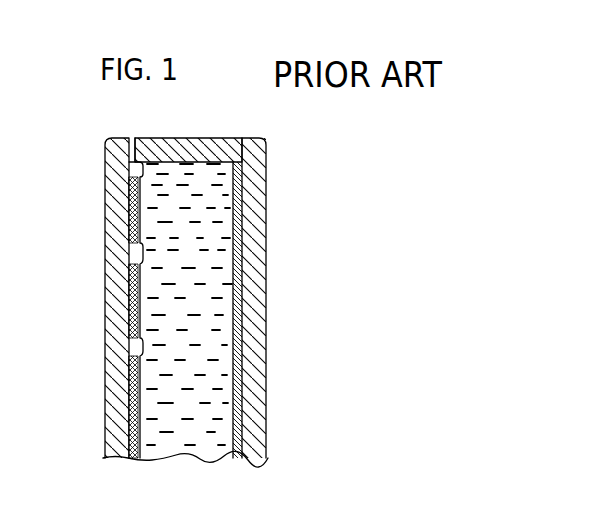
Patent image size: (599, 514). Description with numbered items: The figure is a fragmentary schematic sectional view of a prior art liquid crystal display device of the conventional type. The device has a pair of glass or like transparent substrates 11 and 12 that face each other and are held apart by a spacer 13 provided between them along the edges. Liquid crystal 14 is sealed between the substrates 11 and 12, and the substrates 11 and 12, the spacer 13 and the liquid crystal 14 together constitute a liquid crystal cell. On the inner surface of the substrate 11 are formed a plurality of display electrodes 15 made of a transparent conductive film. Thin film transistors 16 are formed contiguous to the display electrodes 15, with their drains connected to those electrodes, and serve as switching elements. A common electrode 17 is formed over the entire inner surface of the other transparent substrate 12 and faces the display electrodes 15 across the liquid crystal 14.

The transparent substrate 11 is at (104, 398).
The transparent substrate 12 is at (258, 389).
The spacer 13 is at (223, 143).
The liquid crystal 14 is at (224, 233).
The display electrodes 15 is at (133, 201).
The thin film transistors 16 is at (136, 228).
The common electrode 17 is at (240, 288).